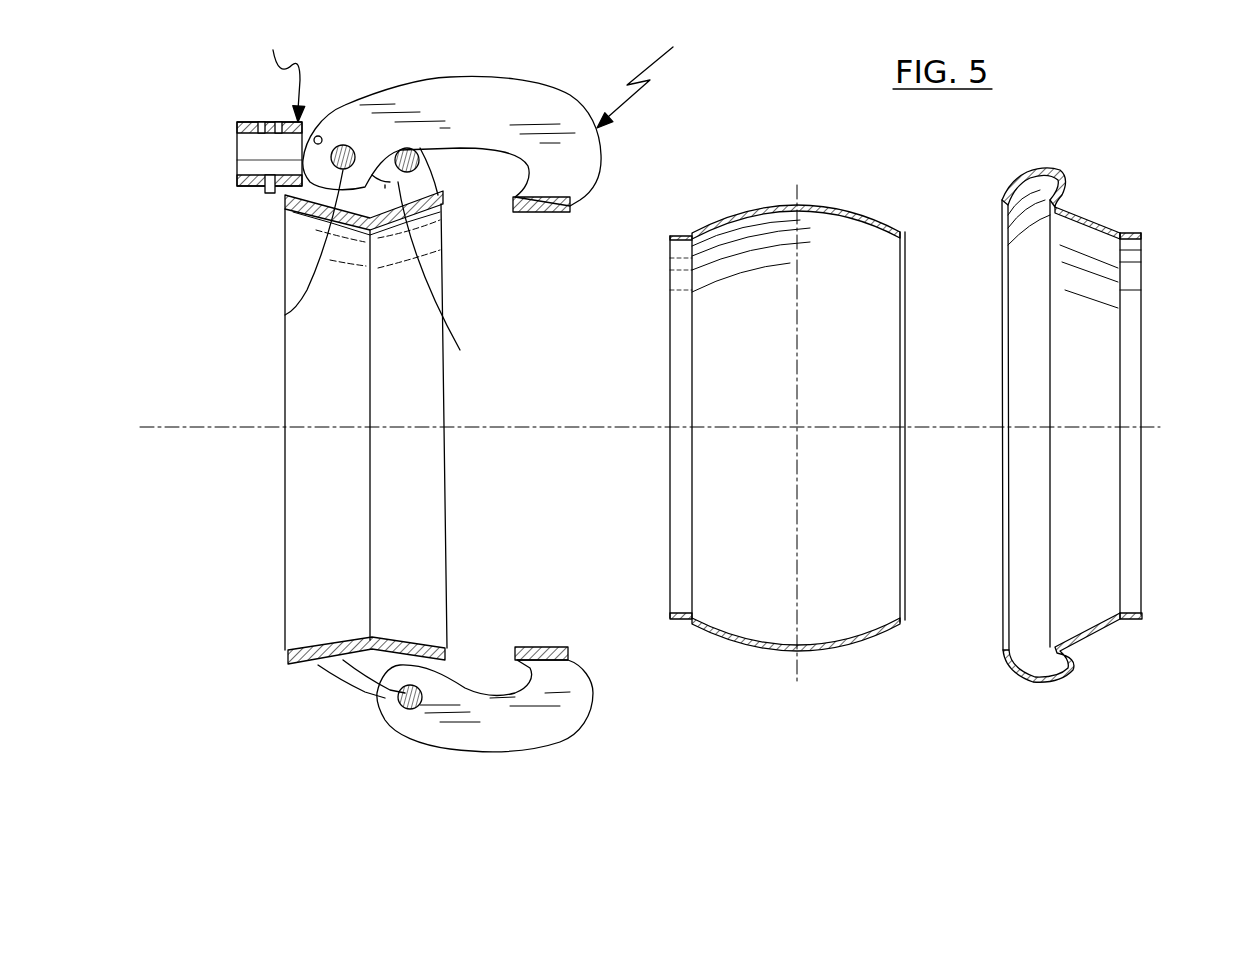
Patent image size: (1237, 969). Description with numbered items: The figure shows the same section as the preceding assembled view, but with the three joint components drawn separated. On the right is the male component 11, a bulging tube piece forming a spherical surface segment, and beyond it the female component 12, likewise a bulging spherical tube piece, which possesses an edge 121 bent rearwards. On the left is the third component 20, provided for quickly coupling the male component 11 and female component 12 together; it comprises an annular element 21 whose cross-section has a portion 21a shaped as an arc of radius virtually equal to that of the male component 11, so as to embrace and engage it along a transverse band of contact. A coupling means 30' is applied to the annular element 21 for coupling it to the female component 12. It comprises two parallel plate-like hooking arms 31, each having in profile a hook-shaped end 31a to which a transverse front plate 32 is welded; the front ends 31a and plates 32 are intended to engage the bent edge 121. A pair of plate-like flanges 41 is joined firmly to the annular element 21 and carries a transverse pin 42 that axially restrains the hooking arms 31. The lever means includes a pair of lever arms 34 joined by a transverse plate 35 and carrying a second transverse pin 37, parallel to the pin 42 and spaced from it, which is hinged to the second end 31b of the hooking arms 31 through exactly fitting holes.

The male component 11 is at (757, 648).
The female component 12 is at (1093, 210).
The edge 121 is at (1020, 173).
The third component 20 is at (483, 412).
The annular element 21 is at (445, 557).
The portion 21a is at (400, 643).
The coupling means 30' is at (382, 788).
The hooking arm 31 is at (553, 723).
The hook-shaped end 31a is at (547, 184).
The second end 31b is at (253, 180).
The transverse front plate 32 is at (557, 203).
The lever arm 34 is at (448, 265).
The transverse plate 35 is at (237, 160).
The second transverse pin 37 is at (285, 315).
The flange 41 is at (440, 184).
The transverse pin 42 is at (365, 187).